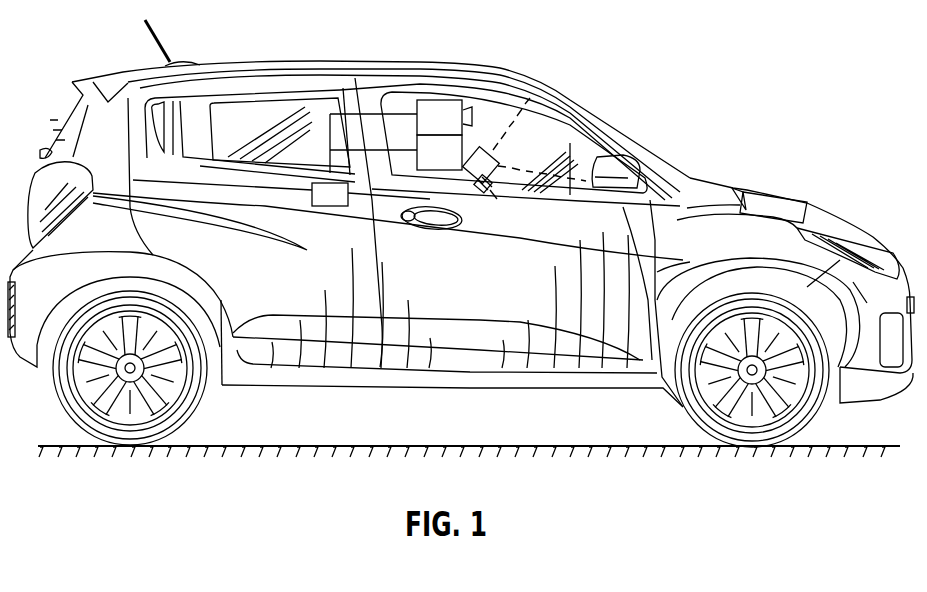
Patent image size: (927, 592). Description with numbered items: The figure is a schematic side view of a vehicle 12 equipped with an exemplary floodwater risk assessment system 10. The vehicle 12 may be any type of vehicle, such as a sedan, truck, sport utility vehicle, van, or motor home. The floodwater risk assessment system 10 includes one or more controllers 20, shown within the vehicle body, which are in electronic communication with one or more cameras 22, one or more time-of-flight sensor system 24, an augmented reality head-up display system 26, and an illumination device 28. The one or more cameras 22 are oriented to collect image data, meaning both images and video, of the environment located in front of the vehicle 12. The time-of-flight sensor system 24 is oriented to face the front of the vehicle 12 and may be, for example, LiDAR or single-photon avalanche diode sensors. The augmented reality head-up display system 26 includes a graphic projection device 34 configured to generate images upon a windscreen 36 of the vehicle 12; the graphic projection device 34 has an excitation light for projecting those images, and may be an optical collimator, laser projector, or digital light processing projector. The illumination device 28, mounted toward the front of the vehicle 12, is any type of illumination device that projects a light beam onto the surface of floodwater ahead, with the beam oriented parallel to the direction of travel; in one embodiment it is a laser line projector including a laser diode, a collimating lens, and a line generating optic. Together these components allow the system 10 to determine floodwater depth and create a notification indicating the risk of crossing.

The floodwater risk assessment system 10 is at (400, 103).
The vehicle 12 is at (245, 62).
The controllers 20 is at (330, 195).
The cameras 22 is at (444, 117).
The time-of-flight sensor system 24 is at (439, 152).
The augmented reality head-up display system 26 is at (454, 216).
The illumination device 28 is at (780, 193).
The graphic projection device 34 is at (497, 157).
The windscreen 36 is at (600, 112).